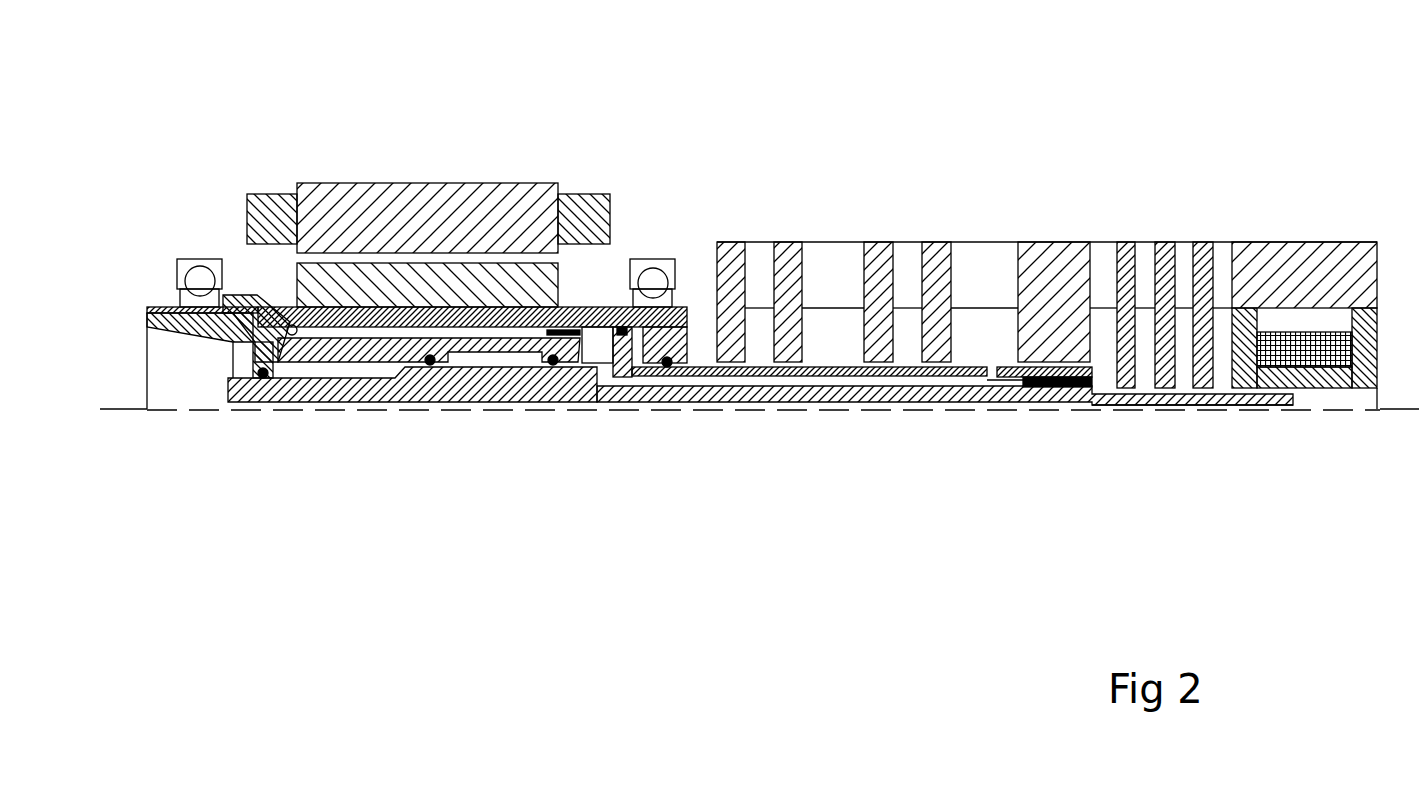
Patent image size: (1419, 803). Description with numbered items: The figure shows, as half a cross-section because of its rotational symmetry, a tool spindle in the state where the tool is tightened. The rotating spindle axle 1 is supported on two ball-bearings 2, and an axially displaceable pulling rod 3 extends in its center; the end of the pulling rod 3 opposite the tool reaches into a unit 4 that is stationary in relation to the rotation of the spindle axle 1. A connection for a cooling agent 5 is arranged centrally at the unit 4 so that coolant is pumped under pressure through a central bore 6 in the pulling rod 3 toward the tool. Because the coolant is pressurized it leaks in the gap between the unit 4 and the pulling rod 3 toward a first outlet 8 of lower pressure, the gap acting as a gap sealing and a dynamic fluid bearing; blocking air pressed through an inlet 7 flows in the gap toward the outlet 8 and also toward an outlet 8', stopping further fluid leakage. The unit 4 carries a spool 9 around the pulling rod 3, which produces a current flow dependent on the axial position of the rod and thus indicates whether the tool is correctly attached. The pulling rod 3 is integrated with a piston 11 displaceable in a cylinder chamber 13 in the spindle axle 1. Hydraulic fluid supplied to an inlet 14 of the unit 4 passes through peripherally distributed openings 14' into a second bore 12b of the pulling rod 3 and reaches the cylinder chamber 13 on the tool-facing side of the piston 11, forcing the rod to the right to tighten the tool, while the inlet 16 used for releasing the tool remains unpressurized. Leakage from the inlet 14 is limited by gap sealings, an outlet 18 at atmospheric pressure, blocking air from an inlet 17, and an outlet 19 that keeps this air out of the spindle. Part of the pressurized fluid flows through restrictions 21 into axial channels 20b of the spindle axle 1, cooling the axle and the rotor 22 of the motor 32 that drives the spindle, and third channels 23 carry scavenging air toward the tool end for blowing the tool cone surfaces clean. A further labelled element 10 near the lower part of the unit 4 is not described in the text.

The spindle axle 1 is at (270, 303).
The ball-bearings 2 is at (198, 259).
The pulling rod 3 is at (408, 378).
The unit 4 is at (1285, 255).
The connection for a cooling agent 5 is at (1350, 400).
The central bore 6 is at (667, 405).
The inlet 7 is at (1185, 270).
The first outlet 8 is at (1226, 223).
The outlet 8' is at (1145, 224).
The spool 9 is at (1303, 337).
The base bottom surface 10 is at (1262, 403).
The piston 11 is at (621, 352).
The second bore 12b is at (927, 380).
The cylinder chamber 13 is at (592, 338).
The inlet 14 is at (977, 229).
The openings 14' is at (1042, 244).
The inlet 16 is at (1102, 270).
The inlet 17 is at (829, 275).
The outlet 18 is at (905, 267).
The outlet 19 is at (757, 257).
The channels 20b is at (463, 333).
The restrictions 21 is at (560, 330).
The rotor 22 is at (440, 275).
The third channels 23 is at (262, 330).
The motor 32 is at (465, 202).